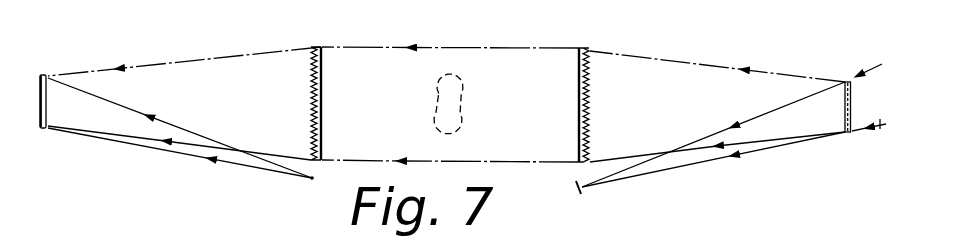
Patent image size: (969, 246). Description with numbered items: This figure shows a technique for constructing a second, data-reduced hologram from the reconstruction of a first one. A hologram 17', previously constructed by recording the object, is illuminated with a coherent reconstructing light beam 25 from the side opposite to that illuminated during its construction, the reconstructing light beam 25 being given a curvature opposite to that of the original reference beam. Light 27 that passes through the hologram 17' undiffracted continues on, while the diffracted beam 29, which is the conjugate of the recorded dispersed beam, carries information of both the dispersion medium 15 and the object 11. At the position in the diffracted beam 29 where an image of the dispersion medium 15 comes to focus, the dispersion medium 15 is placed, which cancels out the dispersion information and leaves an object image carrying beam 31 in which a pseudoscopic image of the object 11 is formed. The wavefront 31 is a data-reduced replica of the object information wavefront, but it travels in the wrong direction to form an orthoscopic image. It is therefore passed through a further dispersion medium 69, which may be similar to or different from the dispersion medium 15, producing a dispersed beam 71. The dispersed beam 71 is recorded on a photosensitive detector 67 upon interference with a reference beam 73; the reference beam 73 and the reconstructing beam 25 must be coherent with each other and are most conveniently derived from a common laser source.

The photosensitive detector 67 is at (44, 74).
The dispersion medium 69 is at (318, 46).
The dispersion medium 15 is at (583, 48).
The hologram 17' is at (835, 74).
The object 11 is at (463, 118).
The dispersed beam 71 is at (159, 67).
The reference beam 73 is at (247, 164).
The object image carrying beam 31 is at (465, 50).
The diffracted beam 29 is at (662, 65).
The undiffracted light 27 is at (670, 165).
The reconstructing light beam 25 is at (881, 128).